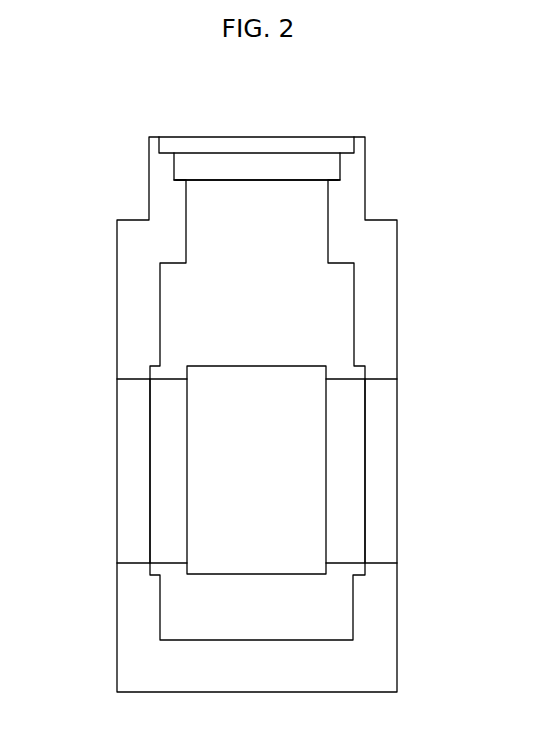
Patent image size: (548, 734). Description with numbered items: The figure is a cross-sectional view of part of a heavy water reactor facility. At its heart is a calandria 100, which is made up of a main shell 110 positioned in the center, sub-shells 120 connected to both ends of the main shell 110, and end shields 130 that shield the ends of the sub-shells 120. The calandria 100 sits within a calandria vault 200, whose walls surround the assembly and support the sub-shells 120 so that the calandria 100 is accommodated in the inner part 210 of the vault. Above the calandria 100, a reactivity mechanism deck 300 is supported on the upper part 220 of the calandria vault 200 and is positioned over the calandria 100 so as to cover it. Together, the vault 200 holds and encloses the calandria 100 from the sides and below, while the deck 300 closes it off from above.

The calandria 100 is at (306, 470).
The main shell 110 is at (455, 408).
The sub-shell 120 is at (348, 462).
The end shield 130 is at (373, 414).
The calandria vault 200 is at (112, 254).
The inner part 210 is at (245, 327).
The upper part 220 is at (264, 190).
The reactivity mechanism deck 300 is at (291, 168).